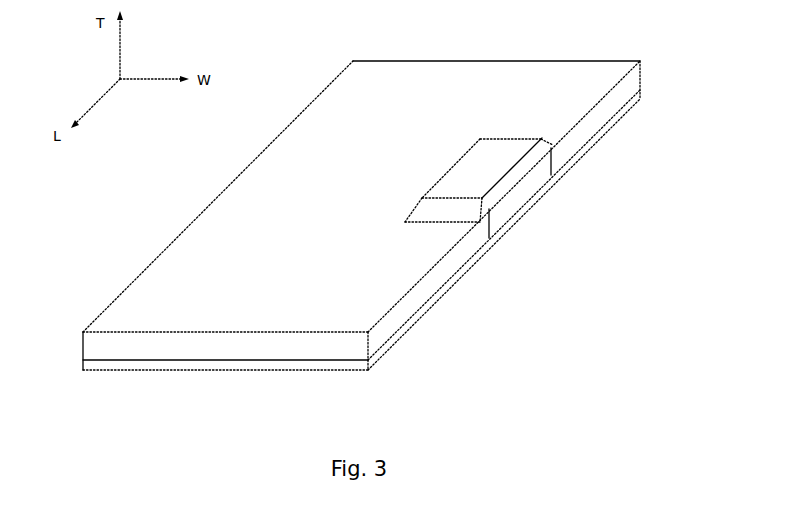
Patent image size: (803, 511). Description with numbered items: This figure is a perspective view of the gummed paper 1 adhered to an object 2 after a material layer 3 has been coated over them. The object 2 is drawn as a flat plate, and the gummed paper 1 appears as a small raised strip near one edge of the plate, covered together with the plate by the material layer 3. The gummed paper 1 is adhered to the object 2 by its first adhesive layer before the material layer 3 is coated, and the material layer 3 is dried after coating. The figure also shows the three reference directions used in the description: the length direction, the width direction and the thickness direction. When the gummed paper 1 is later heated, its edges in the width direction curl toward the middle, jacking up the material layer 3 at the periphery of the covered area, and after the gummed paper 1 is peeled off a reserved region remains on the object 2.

The gummed paper 1 is at (517, 195).
The object 2 is at (410, 325).
The material layer 3 is at (233, 220).